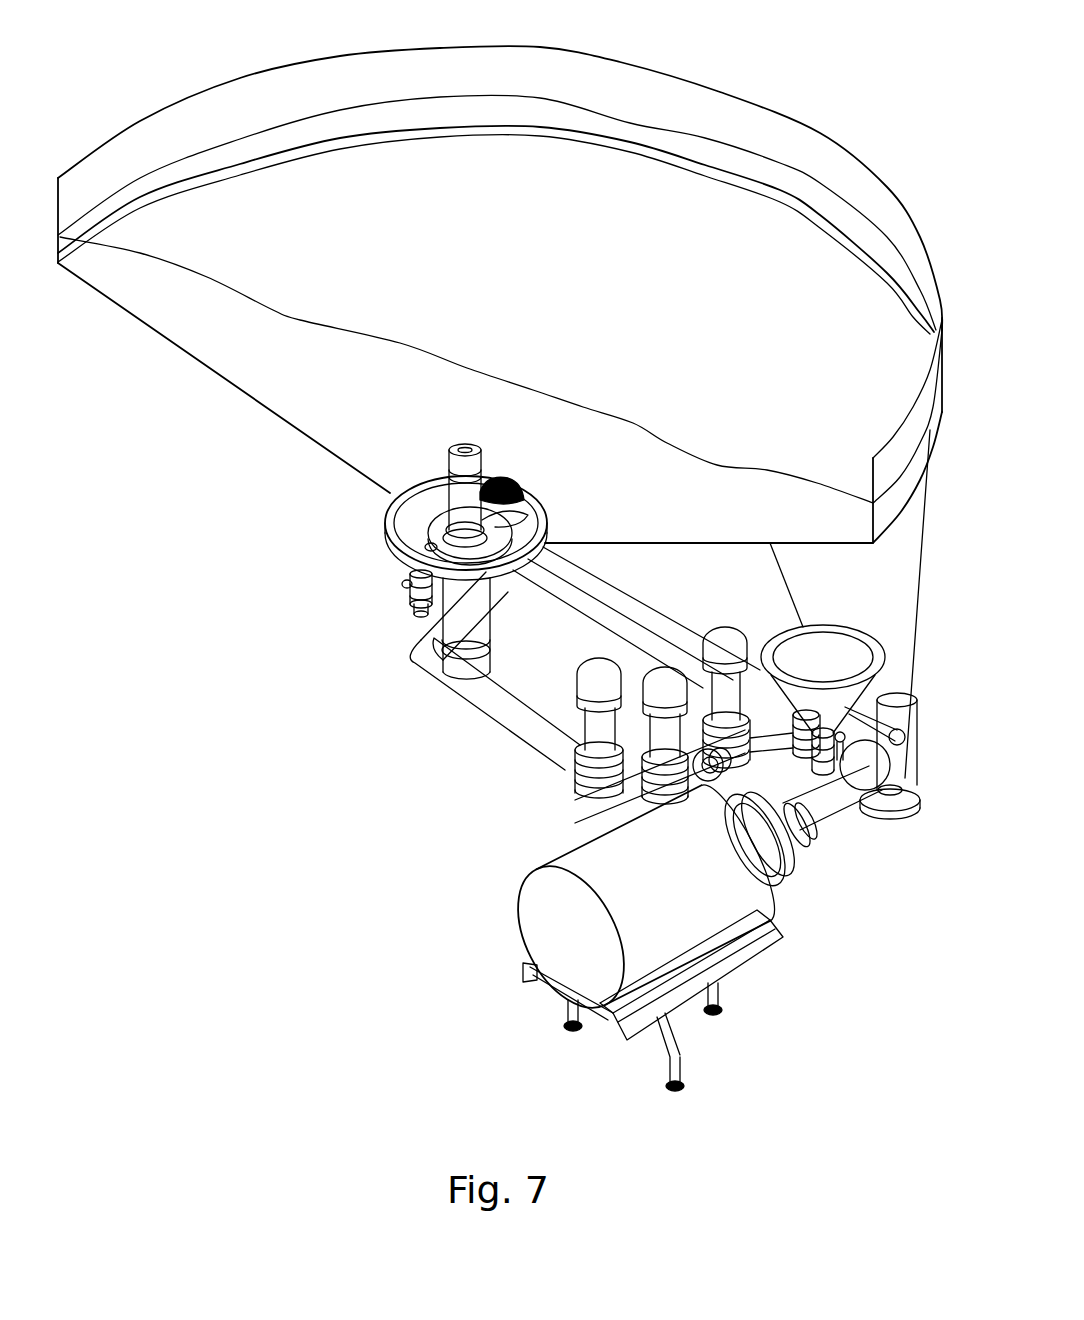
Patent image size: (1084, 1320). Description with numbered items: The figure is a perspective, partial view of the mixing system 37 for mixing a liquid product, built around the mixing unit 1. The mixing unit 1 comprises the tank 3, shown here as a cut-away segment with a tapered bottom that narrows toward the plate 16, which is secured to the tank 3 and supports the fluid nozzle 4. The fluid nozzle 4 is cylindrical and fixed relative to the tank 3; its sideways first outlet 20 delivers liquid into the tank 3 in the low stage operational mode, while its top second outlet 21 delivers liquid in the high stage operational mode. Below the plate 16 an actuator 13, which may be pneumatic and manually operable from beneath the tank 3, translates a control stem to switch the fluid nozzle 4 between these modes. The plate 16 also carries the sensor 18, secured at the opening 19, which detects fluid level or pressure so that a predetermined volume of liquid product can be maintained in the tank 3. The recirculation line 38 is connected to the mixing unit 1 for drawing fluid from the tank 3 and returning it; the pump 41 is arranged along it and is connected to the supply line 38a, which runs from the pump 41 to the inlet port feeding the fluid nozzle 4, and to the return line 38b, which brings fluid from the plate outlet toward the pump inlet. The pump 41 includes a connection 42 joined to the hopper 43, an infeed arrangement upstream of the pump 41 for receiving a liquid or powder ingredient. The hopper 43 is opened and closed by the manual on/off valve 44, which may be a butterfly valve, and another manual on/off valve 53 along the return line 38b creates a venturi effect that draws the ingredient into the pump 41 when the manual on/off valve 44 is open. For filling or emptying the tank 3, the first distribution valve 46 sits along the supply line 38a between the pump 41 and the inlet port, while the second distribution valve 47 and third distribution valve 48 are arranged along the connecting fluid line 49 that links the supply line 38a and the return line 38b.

The mixing system 37 is at (781, 77).
The tank 3 is at (850, 165).
The mixing unit 1 is at (541, 463).
The top second outlet 21 is at (452, 454).
The sideways first outlet 20 is at (452, 470).
The plate 16 is at (388, 516).
The fluid nozzle 4 is at (432, 510).
The opening 19 is at (418, 588).
The sensor 18 is at (418, 604).
The actuator 13 is at (476, 662).
The recirculation line 38 is at (585, 598).
The return line 38b is at (618, 612).
The supply line 38a is at (458, 697).
The hopper 43 is at (840, 640).
The manual on/off valve 44 is at (838, 748).
The second distribution valve 47 is at (736, 731).
The manual on/off valve 53 is at (795, 750).
The first distribution valve 46 is at (577, 775).
The third distribution valve 48 is at (640, 786).
The connecting fluid line 49 is at (645, 803).
The connection 42 is at (790, 856).
The pump 41 is at (540, 910).